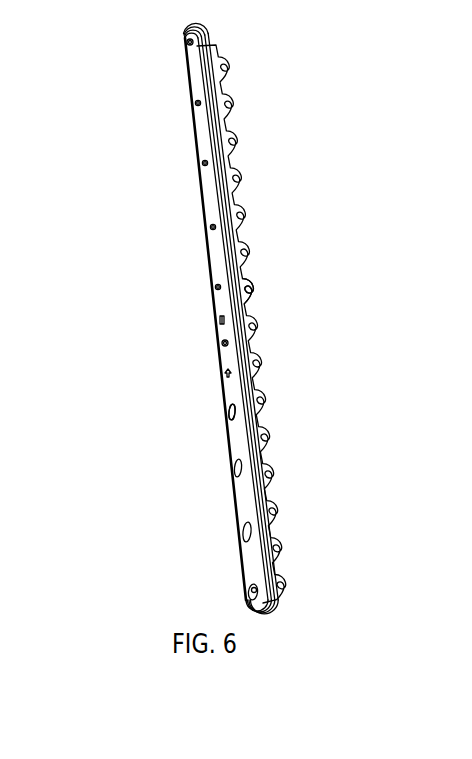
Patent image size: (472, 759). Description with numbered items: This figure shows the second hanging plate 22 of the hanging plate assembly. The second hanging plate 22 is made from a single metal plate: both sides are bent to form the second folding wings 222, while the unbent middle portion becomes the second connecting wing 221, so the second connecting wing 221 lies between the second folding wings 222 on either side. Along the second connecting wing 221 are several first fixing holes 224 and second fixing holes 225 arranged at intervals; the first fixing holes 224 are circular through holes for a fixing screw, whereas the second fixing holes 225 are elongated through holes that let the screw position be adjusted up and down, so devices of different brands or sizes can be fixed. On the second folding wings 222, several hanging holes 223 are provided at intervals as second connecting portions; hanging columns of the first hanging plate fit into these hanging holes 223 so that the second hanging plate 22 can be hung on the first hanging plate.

The second hanging plate 22 is at (205, 313).
The second connecting wing 221 is at (216, 250).
The second folding wings 222 is at (230, 128).
The hanging holes 223 is at (256, 292).
The first fixing holes 224 is at (206, 165).
The second fixing holes 225 is at (230, 411).